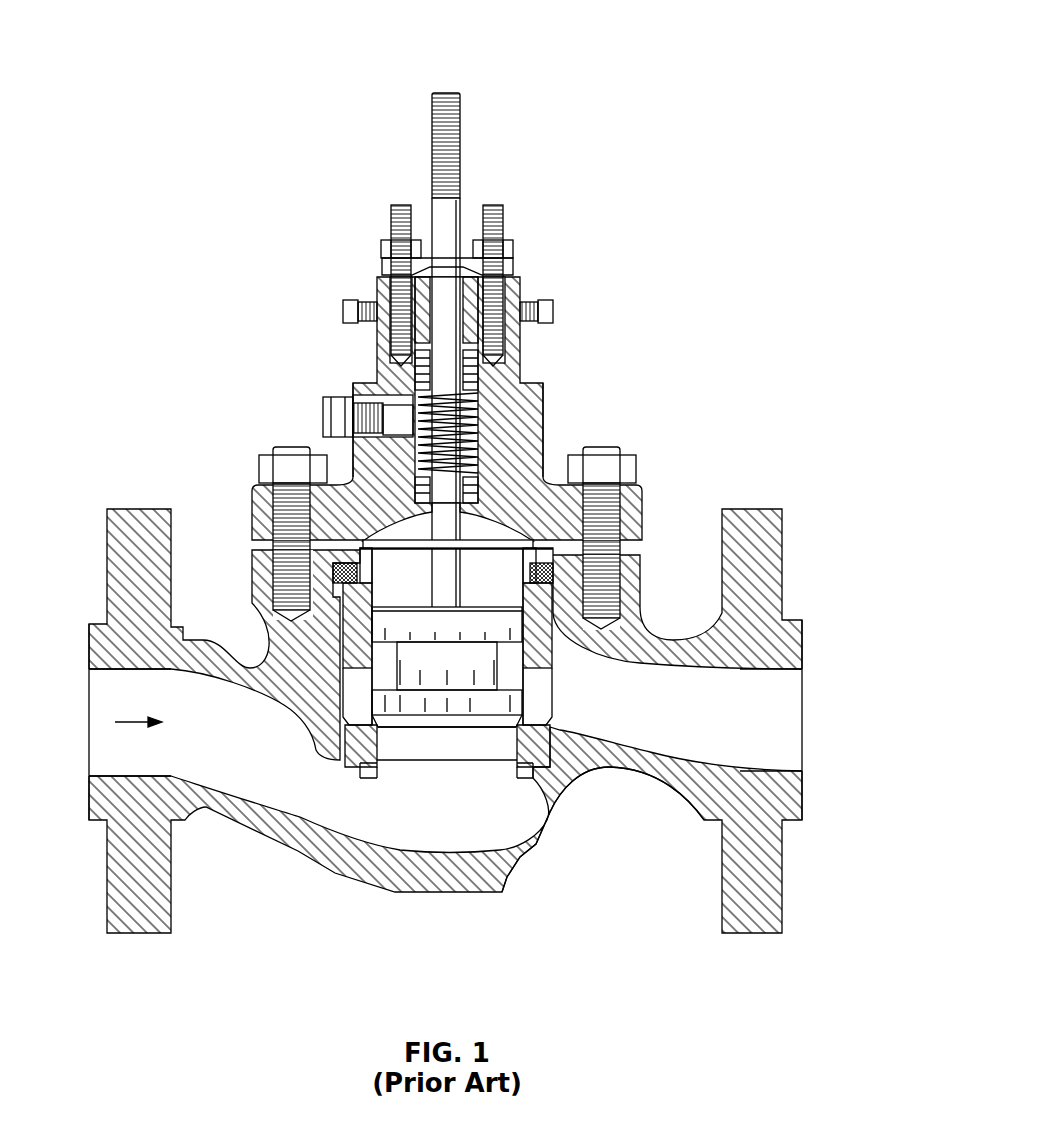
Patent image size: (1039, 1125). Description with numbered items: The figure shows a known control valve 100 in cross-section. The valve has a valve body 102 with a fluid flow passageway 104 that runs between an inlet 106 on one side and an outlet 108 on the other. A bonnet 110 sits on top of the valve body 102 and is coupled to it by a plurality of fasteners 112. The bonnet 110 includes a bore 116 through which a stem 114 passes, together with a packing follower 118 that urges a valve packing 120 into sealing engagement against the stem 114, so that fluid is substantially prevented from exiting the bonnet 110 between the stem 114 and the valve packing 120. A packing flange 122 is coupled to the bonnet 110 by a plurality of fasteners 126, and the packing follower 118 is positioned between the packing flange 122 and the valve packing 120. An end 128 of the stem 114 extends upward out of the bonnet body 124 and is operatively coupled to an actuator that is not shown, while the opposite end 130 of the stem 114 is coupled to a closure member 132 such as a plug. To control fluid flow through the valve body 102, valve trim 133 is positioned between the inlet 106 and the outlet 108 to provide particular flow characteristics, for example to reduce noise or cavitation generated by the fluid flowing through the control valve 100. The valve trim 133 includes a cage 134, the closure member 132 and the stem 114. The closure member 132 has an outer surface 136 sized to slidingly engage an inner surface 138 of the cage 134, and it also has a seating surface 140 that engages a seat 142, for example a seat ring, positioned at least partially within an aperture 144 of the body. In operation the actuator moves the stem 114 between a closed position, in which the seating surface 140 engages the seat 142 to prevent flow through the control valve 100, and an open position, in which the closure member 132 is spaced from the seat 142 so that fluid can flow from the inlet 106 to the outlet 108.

The control valve 100 is at (188, 34).
The valve body 102 is at (740, 509).
The fluid flow passageway 104 is at (226, 747).
The inlet 106 is at (88, 731).
The outlet 108 is at (802, 731).
The bonnet 110 is at (521, 418).
The fasteners 112 is at (291, 447).
The stem 114 is at (432, 137).
The bore 116 is at (422, 400).
The packing follower 118 is at (415, 283).
The valve packing 120 is at (423, 373).
The packing flange 122 is at (382, 268).
The bonnet body 124 is at (543, 388).
The fasteners 126 is at (399, 205).
The end of the stem 128 is at (446, 95).
The opposite end of the stem 130 is at (430, 588).
The closure member 132 is at (418, 730).
The valve trim 133 is at (503, 603).
The cage 134 is at (352, 655).
The outer surface 136 is at (356, 560).
The inner surface 138 is at (528, 563).
The seating surface 140 is at (393, 725).
The seat 142 is at (553, 818).
The aperture 144 is at (578, 790).